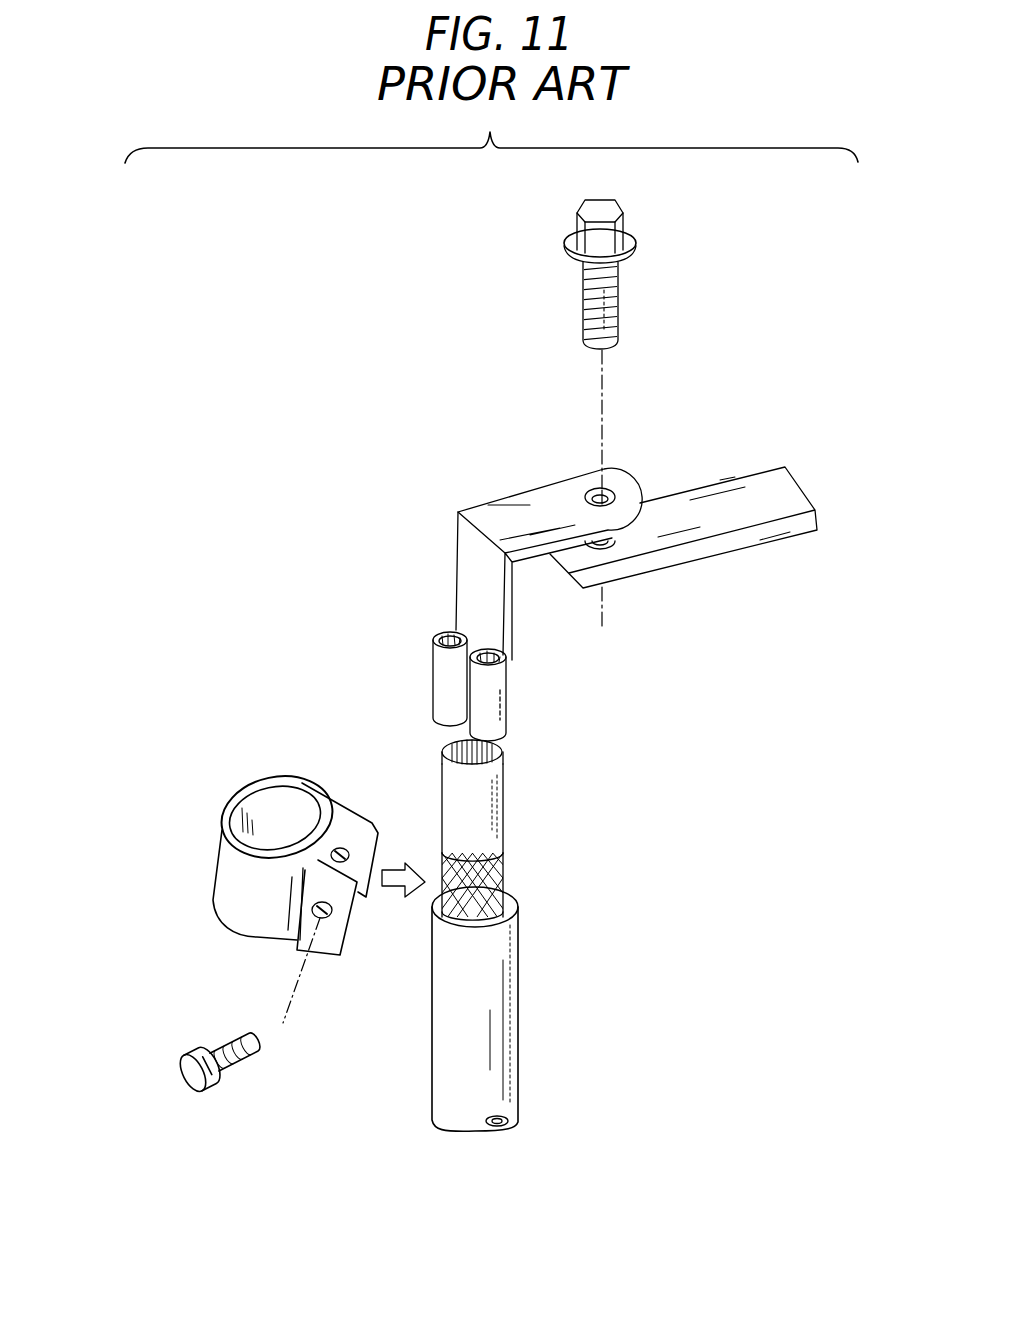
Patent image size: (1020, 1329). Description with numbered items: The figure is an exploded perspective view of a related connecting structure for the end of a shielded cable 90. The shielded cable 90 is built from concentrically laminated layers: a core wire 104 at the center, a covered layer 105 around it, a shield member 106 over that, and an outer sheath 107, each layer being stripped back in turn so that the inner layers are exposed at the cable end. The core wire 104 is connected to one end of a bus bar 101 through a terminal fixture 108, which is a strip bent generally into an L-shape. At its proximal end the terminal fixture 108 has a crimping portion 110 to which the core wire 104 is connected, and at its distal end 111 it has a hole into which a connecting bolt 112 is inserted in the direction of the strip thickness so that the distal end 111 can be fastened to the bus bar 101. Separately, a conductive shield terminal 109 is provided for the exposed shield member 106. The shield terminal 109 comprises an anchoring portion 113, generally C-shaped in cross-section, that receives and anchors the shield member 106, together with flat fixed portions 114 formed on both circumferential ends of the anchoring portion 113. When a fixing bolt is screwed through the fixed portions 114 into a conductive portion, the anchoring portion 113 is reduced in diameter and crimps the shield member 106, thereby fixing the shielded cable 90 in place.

The shielded cable 90 is at (534, 935).
The bus bar 101 is at (740, 510).
The core wire 104 is at (500, 774).
The covered layer 105 is at (483, 812).
The shield member 106 is at (505, 865).
The sheath 107 is at (483, 960).
The terminal fixture 108 is at (448, 382).
The shield terminal 109 is at (297, 694).
The crimping portion 110 is at (443, 672).
The distal end 111 is at (560, 507).
The connecting bolt 112 is at (622, 316).
The anchoring portion 113 is at (217, 857).
The fixed portions 114 is at (343, 830).